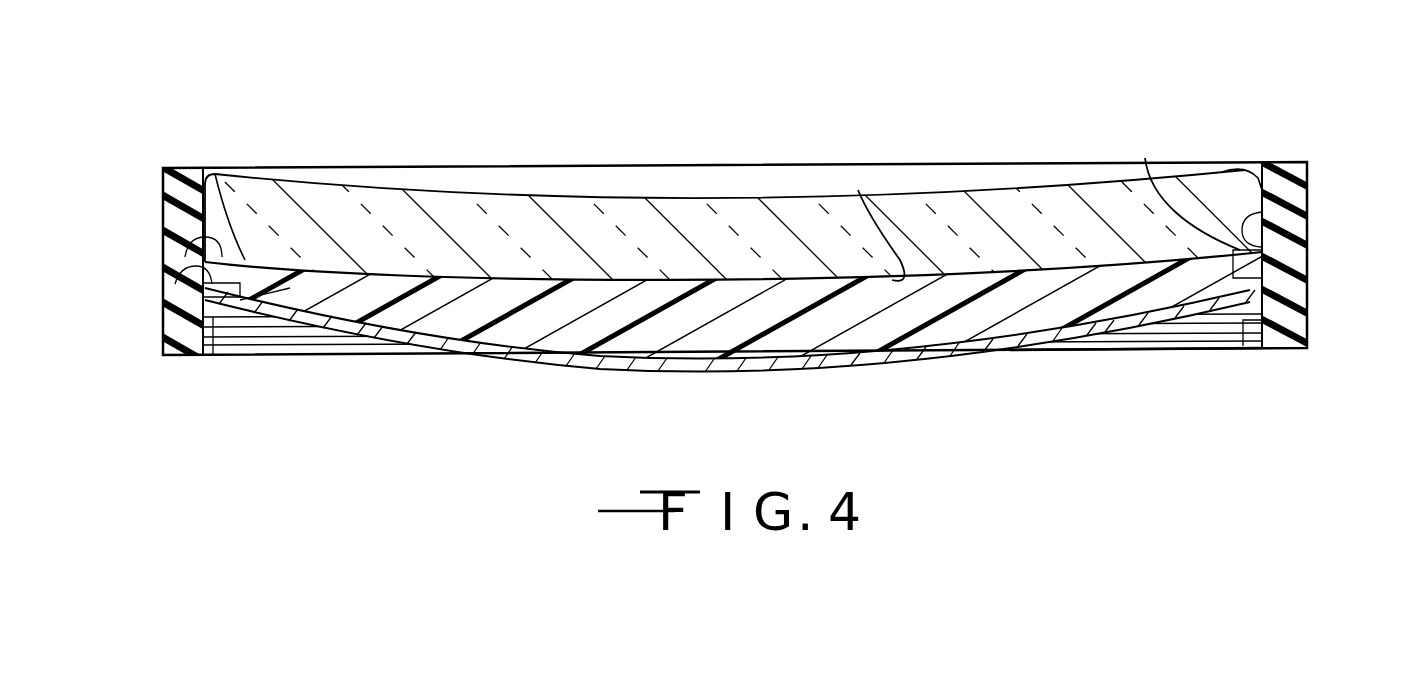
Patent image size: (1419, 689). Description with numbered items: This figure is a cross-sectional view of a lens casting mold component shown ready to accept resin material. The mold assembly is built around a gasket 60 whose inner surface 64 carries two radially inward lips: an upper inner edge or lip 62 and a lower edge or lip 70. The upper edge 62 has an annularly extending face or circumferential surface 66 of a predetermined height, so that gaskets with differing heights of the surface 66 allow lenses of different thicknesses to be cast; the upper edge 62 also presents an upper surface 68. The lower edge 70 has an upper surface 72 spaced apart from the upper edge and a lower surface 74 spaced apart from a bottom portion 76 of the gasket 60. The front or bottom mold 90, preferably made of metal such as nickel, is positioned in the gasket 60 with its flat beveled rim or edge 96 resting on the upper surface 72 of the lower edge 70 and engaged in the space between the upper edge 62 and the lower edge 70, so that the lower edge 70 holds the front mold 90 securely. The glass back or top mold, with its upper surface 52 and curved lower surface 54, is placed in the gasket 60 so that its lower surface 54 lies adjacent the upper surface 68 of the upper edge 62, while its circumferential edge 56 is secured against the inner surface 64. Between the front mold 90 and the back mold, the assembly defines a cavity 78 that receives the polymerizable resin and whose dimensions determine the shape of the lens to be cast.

The upper surface 52 is at (990, 186).
The lower surface 54 is at (860, 193).
The edge 56 is at (1213, 168).
The gasket 60 is at (1318, 172).
The upper inner edge 62 is at (163, 243).
The inner surface 64 is at (163, 190).
The circumferential surface 66 is at (281, 290).
The upper surface 68 is at (1179, 181).
The lower edge 70 is at (237, 298).
The upper surface 72 is at (203, 290).
The lower surface 74 is at (193, 357).
The bottom portion 76 is at (1117, 362).
The cavity 78 is at (753, 333).
The front mold 90 is at (598, 376).
The flat beveled rim 96 is at (168, 274).